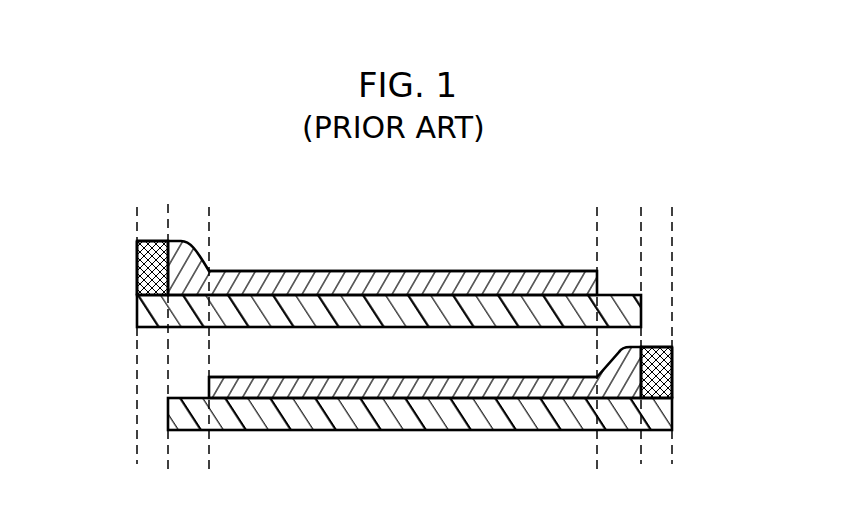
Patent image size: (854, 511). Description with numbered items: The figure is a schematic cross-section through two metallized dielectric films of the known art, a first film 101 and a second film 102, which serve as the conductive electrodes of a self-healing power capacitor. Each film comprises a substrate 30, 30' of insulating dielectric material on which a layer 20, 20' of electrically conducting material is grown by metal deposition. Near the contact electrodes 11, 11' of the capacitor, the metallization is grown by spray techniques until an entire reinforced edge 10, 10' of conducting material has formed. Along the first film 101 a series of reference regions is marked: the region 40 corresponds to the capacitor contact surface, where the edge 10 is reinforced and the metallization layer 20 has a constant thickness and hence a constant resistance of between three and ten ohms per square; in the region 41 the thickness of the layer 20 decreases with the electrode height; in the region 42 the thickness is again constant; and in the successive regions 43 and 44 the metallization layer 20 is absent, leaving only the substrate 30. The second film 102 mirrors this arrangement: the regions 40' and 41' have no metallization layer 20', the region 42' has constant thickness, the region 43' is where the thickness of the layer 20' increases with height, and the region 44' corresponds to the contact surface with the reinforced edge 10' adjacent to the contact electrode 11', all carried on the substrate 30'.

The reinforced edge 10 is at (130, 254).
The contact electrode 11 is at (130, 268).
The layer of electrically conducting material 20 is at (444, 268).
The substrate 30 is at (429, 302).
The reference region 40 is at (131, 259).
The reference region 41 is at (226, 259).
The reference region 42 is at (403, 239).
The reference region 43 is at (601, 258).
The reference region 44 is at (686, 258).
The metallized dielectric film 101 is at (384, 274).
The reinforced edge 10' is at (688, 367).
The contact electrode 11' is at (692, 372).
The layer of electrically conducting material 20' is at (425, 372).
The substrate 30' is at (420, 436).
The reference region 40' is at (130, 406).
The reference region 41' is at (232, 406).
The reference region 42' is at (403, 358).
The reference region 43' is at (594, 406).
The reference region 44' is at (709, 383).
The metallized dielectric film 102 is at (460, 405).